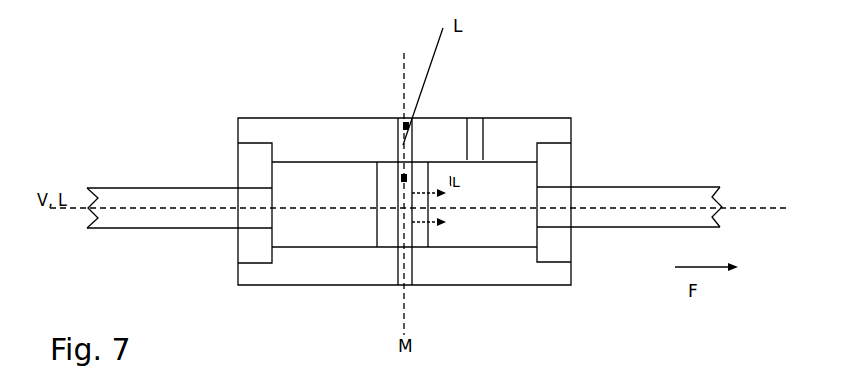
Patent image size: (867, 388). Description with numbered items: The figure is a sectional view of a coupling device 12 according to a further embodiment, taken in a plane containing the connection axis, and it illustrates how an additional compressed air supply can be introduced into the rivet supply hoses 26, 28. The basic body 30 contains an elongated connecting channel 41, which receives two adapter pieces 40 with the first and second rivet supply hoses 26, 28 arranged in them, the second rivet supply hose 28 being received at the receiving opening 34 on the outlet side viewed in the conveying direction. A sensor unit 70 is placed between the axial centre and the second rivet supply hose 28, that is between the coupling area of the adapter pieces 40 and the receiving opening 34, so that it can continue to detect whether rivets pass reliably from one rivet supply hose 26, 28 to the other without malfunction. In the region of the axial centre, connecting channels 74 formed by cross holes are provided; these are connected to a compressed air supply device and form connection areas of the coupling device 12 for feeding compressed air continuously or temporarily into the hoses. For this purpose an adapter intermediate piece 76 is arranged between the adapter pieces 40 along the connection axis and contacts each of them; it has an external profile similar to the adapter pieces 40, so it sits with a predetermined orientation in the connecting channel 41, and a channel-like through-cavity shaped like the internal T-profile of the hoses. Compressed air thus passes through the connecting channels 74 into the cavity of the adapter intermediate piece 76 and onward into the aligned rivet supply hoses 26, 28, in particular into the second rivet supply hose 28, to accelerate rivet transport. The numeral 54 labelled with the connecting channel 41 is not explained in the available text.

The coupling device 12 is at (198, 117).
The first rivet supply hose 26 is at (188, 216).
The second rivet supply hose 28 is at (627, 215).
The basic body 30 is at (360, 137).
The receiving opening 34 is at (602, 155).
The adapter pieces 40 is at (310, 225).
The connecting channel 41 is at (272, 159).
The wall portion 54 is at (282, 160).
The sensor unit 70 is at (479, 138).
The connecting channels 74 is at (412, 125).
The adapter intermediate piece 76 is at (387, 223).